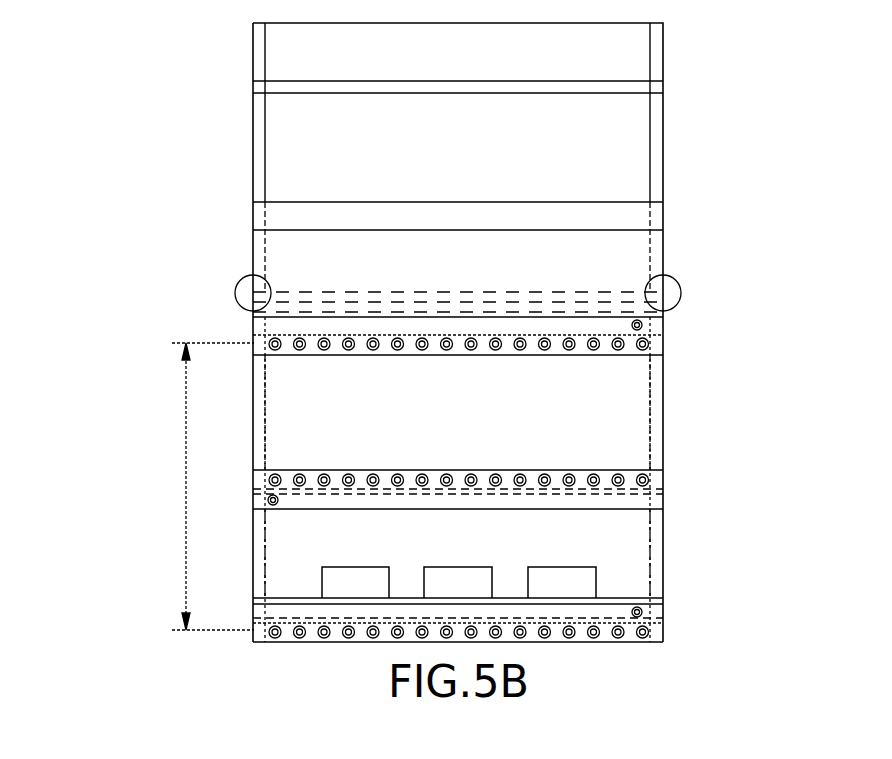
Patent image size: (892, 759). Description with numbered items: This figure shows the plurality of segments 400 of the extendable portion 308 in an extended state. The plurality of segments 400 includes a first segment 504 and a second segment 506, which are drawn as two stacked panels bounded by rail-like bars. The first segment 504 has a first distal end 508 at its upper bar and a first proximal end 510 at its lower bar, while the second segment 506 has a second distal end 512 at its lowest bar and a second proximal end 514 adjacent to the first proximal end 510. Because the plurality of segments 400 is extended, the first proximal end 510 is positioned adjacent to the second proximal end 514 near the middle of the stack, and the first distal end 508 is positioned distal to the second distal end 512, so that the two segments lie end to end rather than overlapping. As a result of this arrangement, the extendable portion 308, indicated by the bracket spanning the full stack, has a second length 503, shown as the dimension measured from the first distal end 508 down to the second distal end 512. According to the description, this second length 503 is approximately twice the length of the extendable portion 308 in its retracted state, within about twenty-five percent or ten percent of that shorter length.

The plurality of segments 400 is at (160, 326).
The extendable portion 308 is at (680, 317).
The second length 503 is at (186, 572).
The first segment 504 is at (274, 421).
The second segment 506 is at (272, 552).
The first distal end 508 is at (253, 327).
The first proximal end 510 is at (258, 482).
The second distal end 512 is at (260, 643).
The second proximal end 514 is at (268, 497).